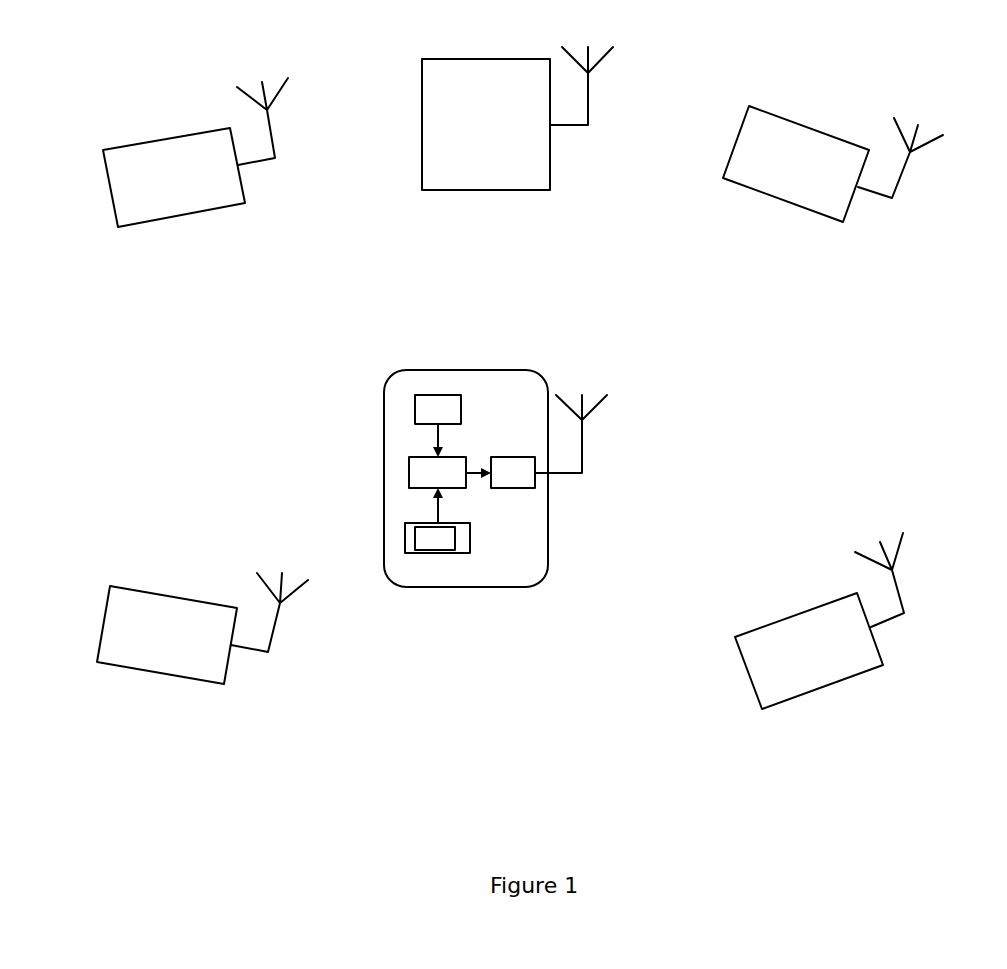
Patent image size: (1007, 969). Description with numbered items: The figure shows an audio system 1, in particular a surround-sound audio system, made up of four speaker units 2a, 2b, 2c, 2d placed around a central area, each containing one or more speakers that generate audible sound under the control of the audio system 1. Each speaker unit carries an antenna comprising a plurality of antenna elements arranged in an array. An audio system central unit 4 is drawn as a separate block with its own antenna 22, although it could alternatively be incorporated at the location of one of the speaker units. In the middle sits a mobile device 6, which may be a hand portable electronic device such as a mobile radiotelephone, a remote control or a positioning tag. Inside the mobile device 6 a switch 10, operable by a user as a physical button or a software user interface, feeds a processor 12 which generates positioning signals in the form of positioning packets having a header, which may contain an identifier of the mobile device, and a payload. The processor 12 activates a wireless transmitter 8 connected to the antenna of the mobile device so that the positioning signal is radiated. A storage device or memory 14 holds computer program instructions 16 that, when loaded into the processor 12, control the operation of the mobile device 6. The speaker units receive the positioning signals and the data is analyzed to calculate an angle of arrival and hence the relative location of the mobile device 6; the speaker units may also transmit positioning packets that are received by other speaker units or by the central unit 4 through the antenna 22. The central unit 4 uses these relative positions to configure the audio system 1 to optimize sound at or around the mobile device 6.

The audio system 1 is at (141, 775).
The speaker unit 2a is at (142, 205).
The speaker unit 2b is at (792, 192).
The speaker unit 2c is at (810, 668).
The speaker unit 2d is at (150, 652).
The audio system central unit 4 is at (483, 150).
The mobile device 6 is at (515, 565).
The wireless transmitter 8 is at (585, 423).
The switch 10 is at (453, 402).
The processor 12 is at (415, 473).
The storage device or memory 14 is at (410, 543).
The computer program instructions 16 is at (438, 540).
The antenna 22 is at (588, 92).